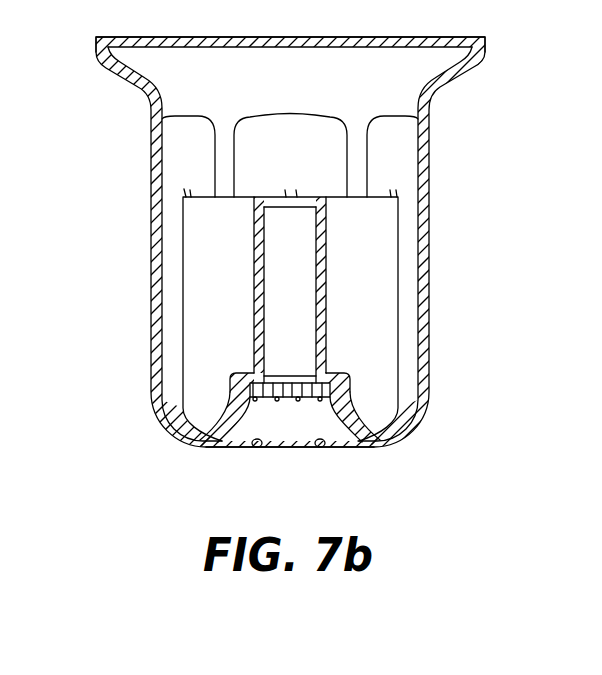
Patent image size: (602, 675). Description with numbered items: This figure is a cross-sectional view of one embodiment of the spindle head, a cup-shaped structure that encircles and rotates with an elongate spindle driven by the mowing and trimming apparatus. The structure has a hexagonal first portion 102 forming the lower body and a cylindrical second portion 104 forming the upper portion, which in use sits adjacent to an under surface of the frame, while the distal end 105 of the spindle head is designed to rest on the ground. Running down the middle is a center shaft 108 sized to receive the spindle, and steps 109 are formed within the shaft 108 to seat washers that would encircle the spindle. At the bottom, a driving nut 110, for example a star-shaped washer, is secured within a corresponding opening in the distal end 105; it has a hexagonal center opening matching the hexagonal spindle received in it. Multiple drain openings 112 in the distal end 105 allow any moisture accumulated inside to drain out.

The first portion 102 is at (421, 232).
The second portion 104 is at (488, 40).
The distal end 105 is at (309, 449).
The center shaft 108 is at (313, 280).
The steps 109 is at (302, 207).
The driving nut 110 is at (303, 392).
The drain openings 112 is at (258, 446).